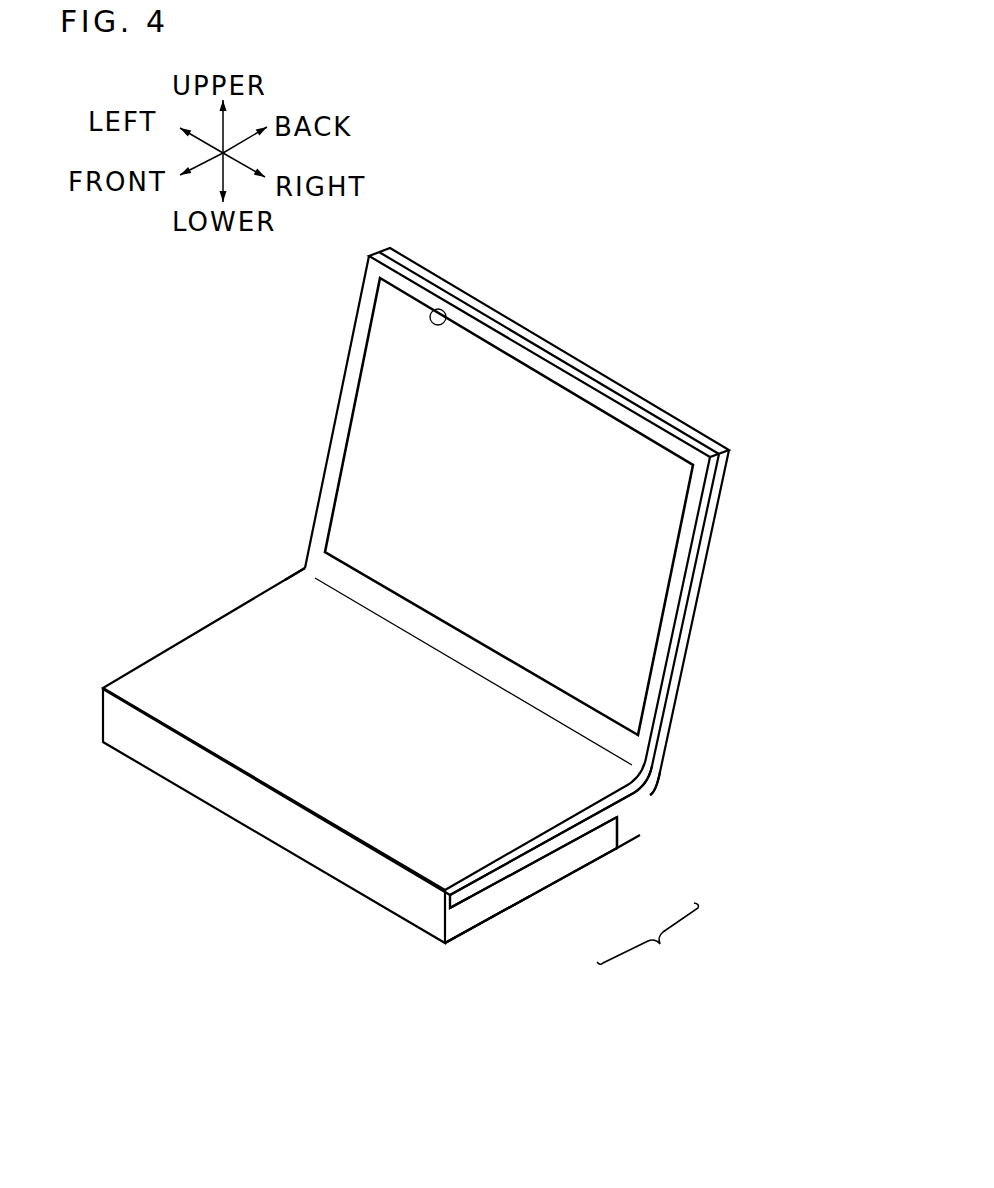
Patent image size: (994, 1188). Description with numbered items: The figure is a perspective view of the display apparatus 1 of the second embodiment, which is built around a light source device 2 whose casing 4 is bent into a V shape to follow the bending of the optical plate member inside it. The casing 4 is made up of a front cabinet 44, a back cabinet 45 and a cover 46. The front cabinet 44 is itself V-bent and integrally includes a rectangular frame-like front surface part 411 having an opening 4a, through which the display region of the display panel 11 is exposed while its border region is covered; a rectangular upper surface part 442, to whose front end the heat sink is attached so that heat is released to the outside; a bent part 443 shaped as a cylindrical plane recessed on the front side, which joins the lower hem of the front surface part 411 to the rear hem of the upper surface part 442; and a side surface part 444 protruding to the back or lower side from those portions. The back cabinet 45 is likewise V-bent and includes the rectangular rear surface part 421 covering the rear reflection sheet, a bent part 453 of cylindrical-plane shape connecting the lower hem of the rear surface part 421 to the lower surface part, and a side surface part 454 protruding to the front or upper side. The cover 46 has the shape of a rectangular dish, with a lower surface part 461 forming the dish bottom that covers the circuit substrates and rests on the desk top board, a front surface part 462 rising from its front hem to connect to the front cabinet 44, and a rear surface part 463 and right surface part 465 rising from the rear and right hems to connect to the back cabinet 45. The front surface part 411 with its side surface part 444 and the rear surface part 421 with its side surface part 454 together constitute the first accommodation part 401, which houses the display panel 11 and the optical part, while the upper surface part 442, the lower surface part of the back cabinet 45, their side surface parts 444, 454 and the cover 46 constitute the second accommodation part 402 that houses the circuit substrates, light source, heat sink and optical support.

The display apparatus 1 is at (688, 269).
The light source device 2 is at (627, 847).
The casing 4 is at (648, 935).
The opening 4a is at (445, 308).
The display panel 11 is at (497, 393).
The first accommodation part 401 is at (688, 397).
The second accommodation part 402 is at (304, 881).
The front surface part 411 is at (343, 431).
The rear surface part 421 is at (706, 577).
The front cabinet 44 is at (535, 851).
The back cabinet 45 is at (564, 847).
The cover 46 is at (600, 854).
The upper surface part 442 is at (210, 660).
The bent part 443 is at (312, 576).
The side surface part 444 is at (463, 892).
The bent part 453 is at (665, 777).
The side surface part 454 is at (652, 787).
The lower surface part 461 is at (488, 921).
The front surface part 462 is at (253, 805).
The rear surface part 463 is at (620, 828).
The right surface part 465 is at (512, 893).